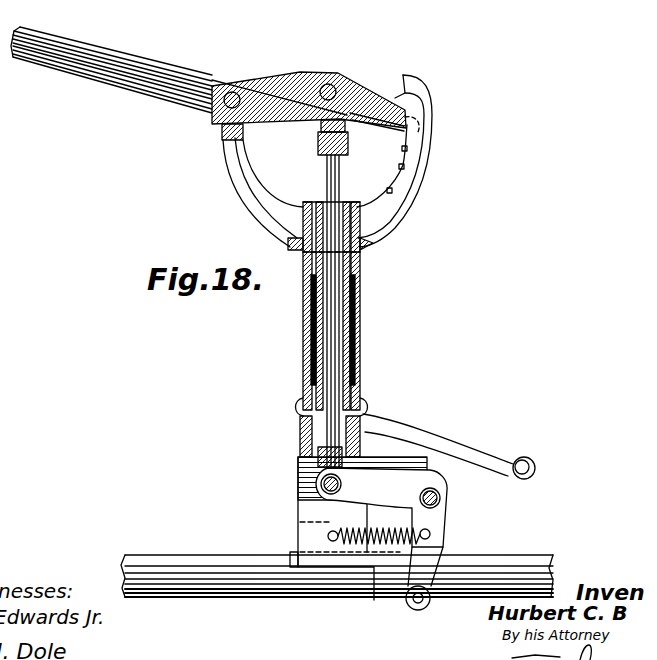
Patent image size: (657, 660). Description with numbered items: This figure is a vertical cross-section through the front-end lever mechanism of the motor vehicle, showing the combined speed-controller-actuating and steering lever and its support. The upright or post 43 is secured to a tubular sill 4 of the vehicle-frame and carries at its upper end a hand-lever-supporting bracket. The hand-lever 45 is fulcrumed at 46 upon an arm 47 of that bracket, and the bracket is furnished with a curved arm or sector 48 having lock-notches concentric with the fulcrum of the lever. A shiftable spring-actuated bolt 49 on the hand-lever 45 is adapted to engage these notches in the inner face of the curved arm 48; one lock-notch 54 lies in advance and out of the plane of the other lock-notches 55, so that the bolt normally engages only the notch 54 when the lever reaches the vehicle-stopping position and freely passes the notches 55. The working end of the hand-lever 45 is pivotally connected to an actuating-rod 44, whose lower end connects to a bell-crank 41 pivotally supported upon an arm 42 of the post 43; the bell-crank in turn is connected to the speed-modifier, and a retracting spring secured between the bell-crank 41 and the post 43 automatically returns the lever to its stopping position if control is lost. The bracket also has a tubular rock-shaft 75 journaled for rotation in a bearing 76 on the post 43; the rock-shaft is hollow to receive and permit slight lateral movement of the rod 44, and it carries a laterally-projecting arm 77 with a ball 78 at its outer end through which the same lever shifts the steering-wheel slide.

The tubular sill 4 is at (206, 563).
The bell-crank 41 is at (333, 504).
The arm 42 is at (401, 472).
The upright or post 43 is at (298, 475).
The actuating-rod 44 is at (327, 182).
The hand-lever 45 is at (110, 83).
The fulcrum 46 is at (232, 98).
The arm of hand-lever-supporting bracket 47 is at (232, 173).
The curved arm or sector 48 is at (431, 156).
The spring-actuated bolt 49 is at (378, 112).
The lock-notch 54 is at (412, 119).
The lock-notches 55 is at (388, 190).
The tubular rock-shaft 75 is at (358, 262).
The bearing 76 is at (303, 263).
The laterally-projecting arm 77 is at (466, 457).
The ball 78 is at (526, 466).